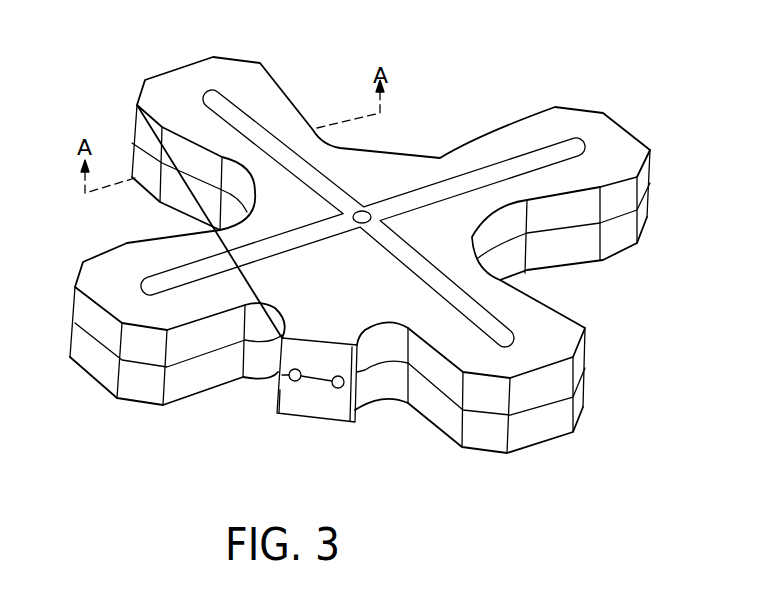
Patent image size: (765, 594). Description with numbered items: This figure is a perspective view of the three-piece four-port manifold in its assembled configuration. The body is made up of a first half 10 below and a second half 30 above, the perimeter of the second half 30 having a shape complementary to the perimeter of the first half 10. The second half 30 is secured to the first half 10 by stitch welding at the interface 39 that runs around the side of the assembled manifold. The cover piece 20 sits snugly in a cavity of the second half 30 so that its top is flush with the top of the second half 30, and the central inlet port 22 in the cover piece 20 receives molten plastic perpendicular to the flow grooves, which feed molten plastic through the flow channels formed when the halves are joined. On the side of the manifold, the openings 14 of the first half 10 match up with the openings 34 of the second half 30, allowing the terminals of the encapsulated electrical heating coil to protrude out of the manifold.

The first half 10 is at (570, 257).
The second half 30 is at (593, 125).
The interface 39 is at (525, 410).
The cover piece 20 is at (565, 150).
The central inlet port 22 is at (365, 208).
The openings 14 is at (292, 381).
The openings 34 is at (338, 388).